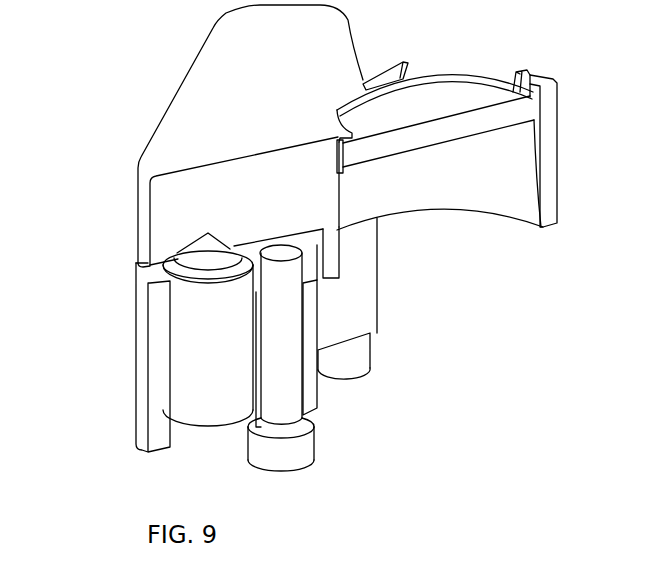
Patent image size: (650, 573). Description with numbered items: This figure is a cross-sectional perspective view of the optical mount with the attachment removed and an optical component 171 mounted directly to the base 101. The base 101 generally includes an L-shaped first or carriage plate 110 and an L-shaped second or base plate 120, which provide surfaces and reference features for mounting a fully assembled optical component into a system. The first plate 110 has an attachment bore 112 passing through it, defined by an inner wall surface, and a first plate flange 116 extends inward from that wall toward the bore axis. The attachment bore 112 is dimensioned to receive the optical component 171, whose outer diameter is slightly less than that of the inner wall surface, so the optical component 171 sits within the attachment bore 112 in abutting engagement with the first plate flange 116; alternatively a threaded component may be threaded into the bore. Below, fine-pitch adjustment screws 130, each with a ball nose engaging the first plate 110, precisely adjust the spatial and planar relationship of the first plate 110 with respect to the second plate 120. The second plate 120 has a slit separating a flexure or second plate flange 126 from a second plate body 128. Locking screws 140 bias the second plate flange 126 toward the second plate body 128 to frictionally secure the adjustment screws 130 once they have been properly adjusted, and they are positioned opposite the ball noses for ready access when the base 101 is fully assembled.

The base 101 is at (129, 55).
The first plate 110 is at (138, 212).
The attachment bore 112 is at (441, 245).
The first plate flange 116 is at (363, 85).
The second plate 120 is at (150, 357).
The second plate flange 126 is at (307, 270).
The second plate body 128 is at (307, 325).
The adjustment screw 130 is at (203, 403).
The locking screw 140 is at (282, 455).
The optical component 171 is at (433, 133).